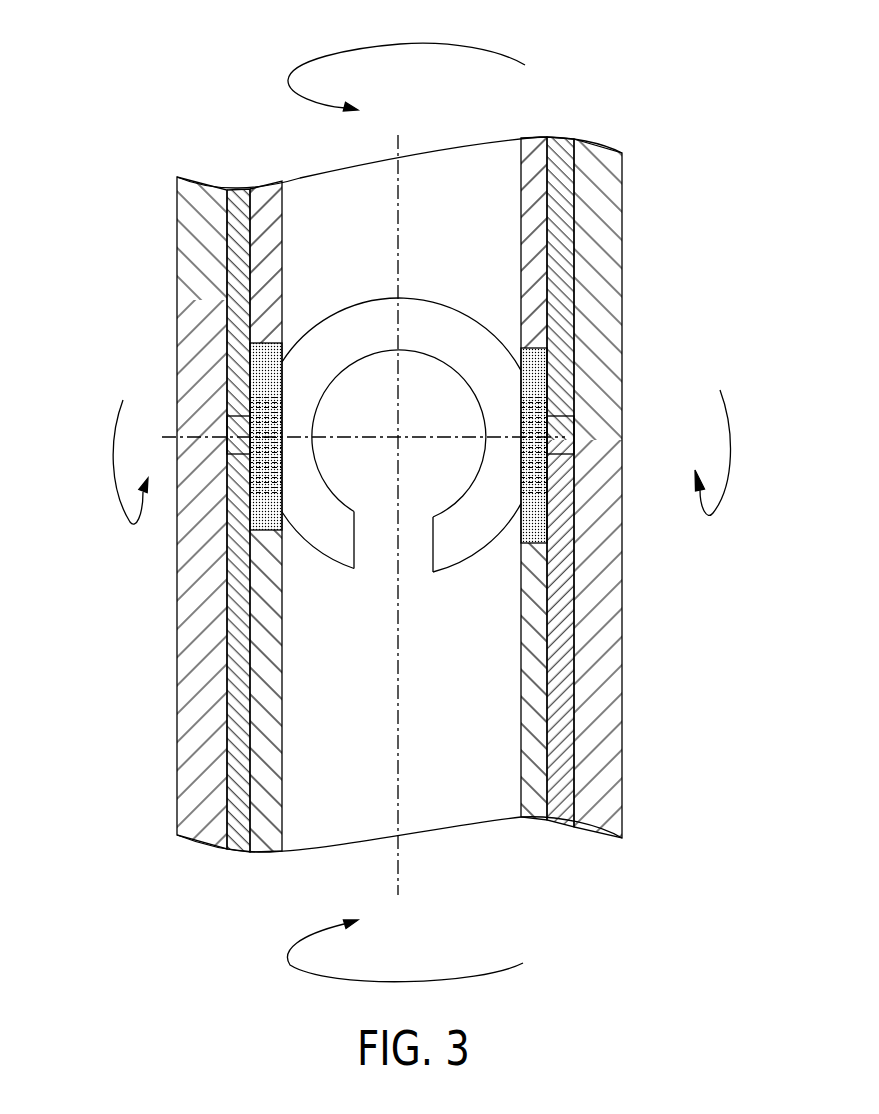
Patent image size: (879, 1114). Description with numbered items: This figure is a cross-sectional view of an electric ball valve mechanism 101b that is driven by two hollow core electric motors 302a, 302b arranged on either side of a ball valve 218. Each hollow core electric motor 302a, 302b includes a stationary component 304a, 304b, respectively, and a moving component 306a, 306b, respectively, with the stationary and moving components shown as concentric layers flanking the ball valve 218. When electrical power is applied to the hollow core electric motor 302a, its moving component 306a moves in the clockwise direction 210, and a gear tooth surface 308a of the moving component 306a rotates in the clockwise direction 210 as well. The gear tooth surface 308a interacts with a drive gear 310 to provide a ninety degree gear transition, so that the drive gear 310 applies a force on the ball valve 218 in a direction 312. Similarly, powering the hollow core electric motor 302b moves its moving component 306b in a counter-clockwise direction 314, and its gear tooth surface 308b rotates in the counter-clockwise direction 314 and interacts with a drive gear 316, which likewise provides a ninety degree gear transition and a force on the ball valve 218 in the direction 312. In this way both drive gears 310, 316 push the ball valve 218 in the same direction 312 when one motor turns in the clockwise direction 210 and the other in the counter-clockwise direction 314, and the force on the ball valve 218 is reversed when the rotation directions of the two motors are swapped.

The electric ball valve mechanism 101b is at (642, 126).
The ball valve 218 is at (445, 312).
The clockwise direction 210 is at (323, 977).
The hollow core electric motor 302a is at (236, 721).
The hollow core electric motor 302b is at (566, 313).
The stationary component 304a is at (232, 840).
The stationary component 304b is at (232, 186).
The moving component 306a is at (280, 851).
The moving component 306b is at (276, 186).
The gear tooth surface 308a is at (548, 550).
The gear tooth surface 308b is at (260, 340).
The drive gear 310 is at (548, 420).
The direction 312 is at (112, 440).
The counter-clockwise direction 314 is at (500, 52).
The drive gear 316 is at (257, 430).